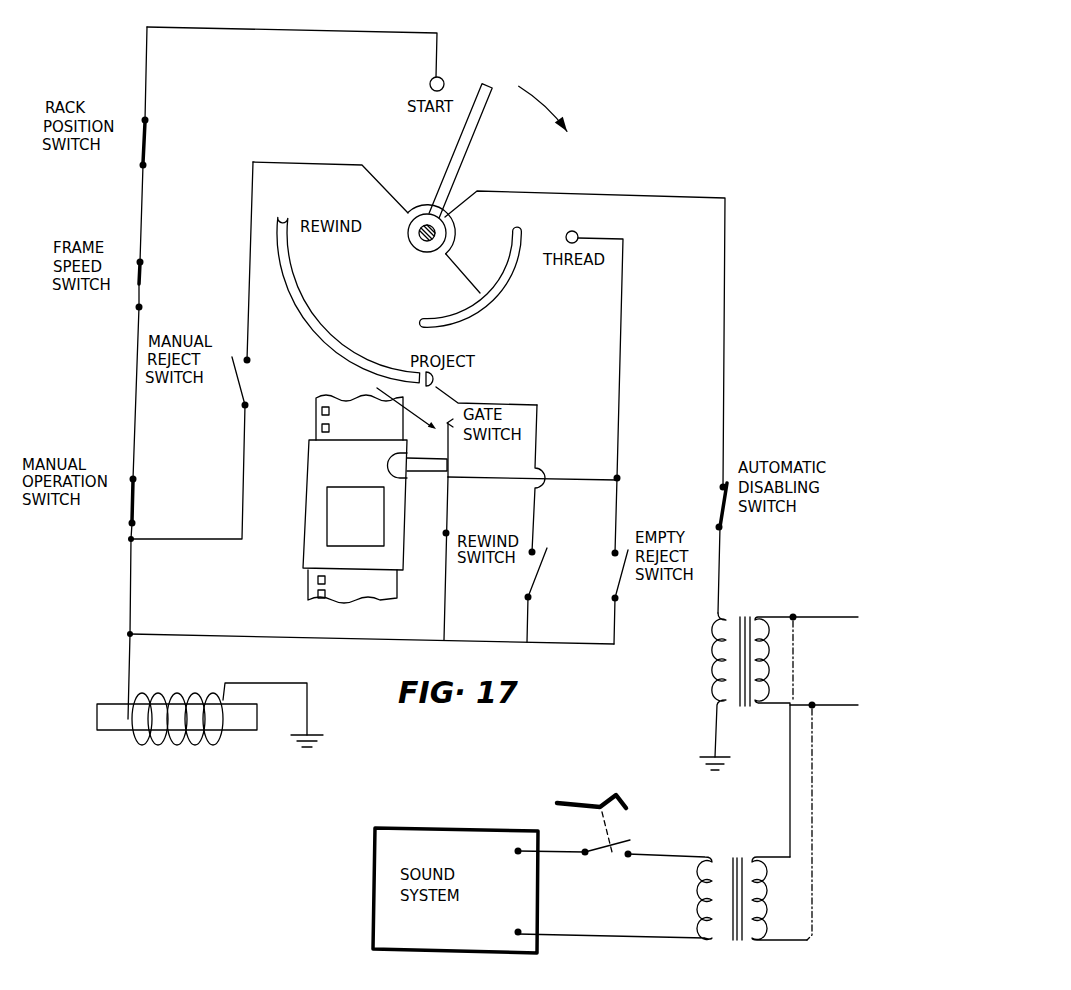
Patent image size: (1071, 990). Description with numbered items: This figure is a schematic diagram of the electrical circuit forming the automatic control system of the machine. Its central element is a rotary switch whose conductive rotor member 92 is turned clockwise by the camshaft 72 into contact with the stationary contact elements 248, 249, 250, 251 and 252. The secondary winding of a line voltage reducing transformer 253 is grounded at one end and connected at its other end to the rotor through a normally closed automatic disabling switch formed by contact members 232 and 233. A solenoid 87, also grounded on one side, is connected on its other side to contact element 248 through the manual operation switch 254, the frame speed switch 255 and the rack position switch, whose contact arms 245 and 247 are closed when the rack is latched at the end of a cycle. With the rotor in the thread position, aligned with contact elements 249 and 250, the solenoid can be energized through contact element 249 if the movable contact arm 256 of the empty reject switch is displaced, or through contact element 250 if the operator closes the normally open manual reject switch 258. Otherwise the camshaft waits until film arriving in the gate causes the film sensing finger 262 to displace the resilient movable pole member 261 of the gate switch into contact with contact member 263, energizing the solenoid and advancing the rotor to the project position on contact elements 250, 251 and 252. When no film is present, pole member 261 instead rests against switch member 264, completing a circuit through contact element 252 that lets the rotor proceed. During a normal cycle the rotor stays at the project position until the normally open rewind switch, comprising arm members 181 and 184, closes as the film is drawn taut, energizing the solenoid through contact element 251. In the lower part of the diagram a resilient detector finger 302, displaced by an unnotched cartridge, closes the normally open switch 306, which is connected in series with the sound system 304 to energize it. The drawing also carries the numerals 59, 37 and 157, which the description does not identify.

The contact element 248 is at (430, 81).
The contact arm 247 is at (148, 118).
The contact arm 245 is at (143, 140).
The frame speed switch 255 is at (139, 282).
The manual reject switch 258 is at (240, 380).
The manual operation switch 254 is at (133, 498).
The conductive rotor member 92 is at (476, 129).
The camshaft 72 is at (414, 235).
The contact element 249 is at (577, 231).
The contact element 250 is at (510, 289).
The contact element 252 is at (347, 343).
The contact element 251 is at (434, 379).
The switch member 264 is at (388, 401).
The contact member 263 is at (458, 443).
The film sensing finger 262 is at (425, 468).
The resilient movable pole member 261 is at (447, 513).
The projector film gate 59 is at (308, 543).
The film strip 37 is at (398, 585).
The arm member 184 is at (532, 552).
The arm member 181 is at (540, 572).
The empty reject switch contact 157 is at (613, 551).
The movable contact arm 256 is at (627, 577).
The contact member 233 is at (721, 486).
The contact member 232 is at (723, 513).
The line voltage reducing transformer 253 is at (717, 683).
The solenoid 87 is at (182, 693).
The resilient detector finger 302 is at (597, 802).
The sound system 304 is at (374, 878).
The normally open switch 306 is at (606, 855).